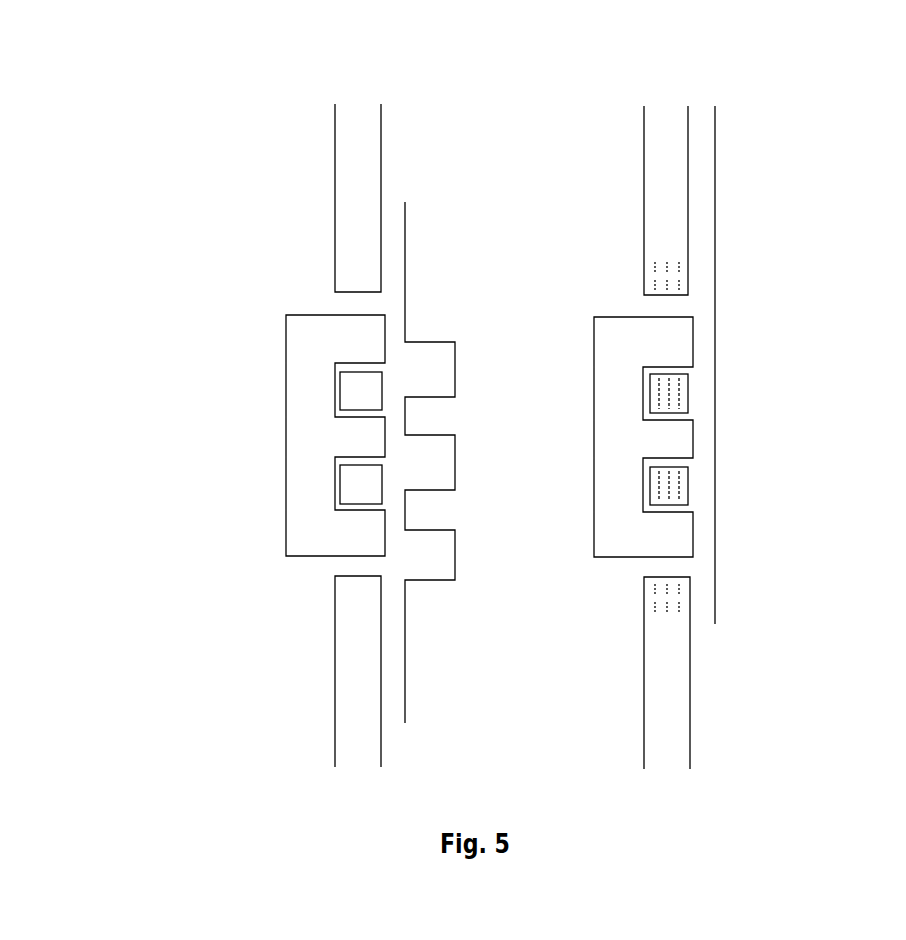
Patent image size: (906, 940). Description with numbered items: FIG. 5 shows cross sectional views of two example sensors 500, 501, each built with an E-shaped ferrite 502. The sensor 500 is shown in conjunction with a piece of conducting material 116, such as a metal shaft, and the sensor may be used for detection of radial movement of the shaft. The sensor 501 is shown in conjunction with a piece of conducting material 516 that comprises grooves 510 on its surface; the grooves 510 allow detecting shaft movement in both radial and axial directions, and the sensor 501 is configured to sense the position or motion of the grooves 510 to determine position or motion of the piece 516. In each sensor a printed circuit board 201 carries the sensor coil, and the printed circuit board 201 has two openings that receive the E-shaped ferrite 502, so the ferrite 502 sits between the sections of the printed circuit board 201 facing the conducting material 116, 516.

The piece of conducting material 116 is at (707, 115).
The printed circuit board 201 is at (340, 187).
The sensor 500 is at (632, 315).
The sensor 501 is at (289, 373).
The E-shaped ferrite 502 is at (285, 430).
The grooves 510 is at (427, 370).
The piece of conducting material 516 is at (413, 263).